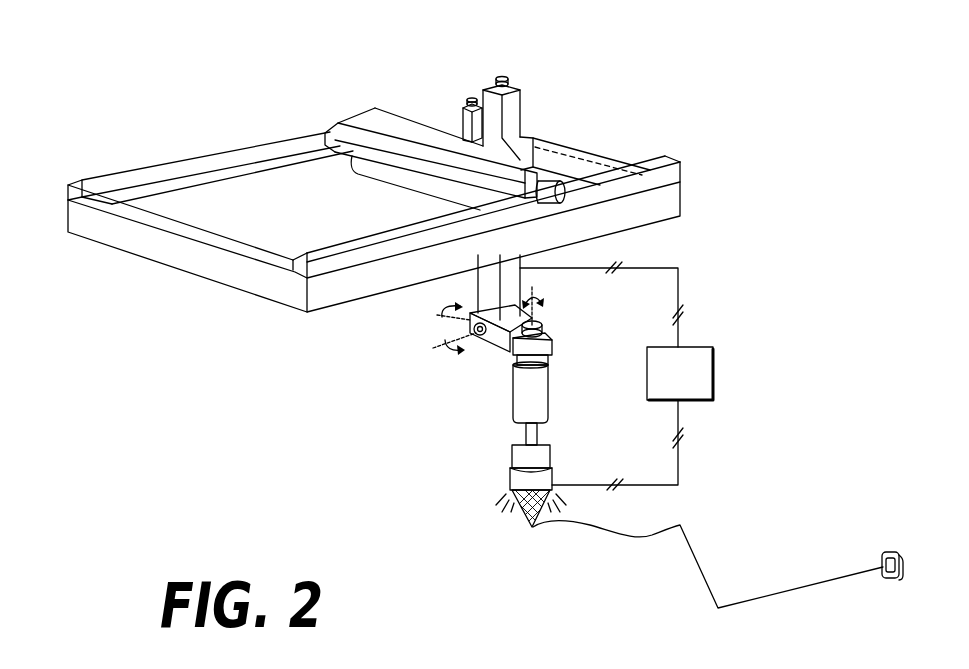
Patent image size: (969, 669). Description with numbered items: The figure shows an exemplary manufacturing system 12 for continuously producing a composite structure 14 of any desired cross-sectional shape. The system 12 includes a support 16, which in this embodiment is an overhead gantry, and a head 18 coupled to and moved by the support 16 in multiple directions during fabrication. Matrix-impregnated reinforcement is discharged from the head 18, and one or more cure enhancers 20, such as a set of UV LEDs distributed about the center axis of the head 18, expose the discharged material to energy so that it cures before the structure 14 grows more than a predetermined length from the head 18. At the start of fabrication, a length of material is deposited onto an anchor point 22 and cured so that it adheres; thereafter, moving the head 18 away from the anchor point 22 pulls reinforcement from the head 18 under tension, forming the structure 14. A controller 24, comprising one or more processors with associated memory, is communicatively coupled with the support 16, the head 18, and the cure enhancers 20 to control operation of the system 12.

The system 12 is at (136, 113).
The composite structure 14 is at (680, 525).
The support 16 is at (667, 202).
The head 18 is at (535, 457).
The cure enhancer 20 is at (512, 490).
The anchor point 22 is at (892, 552).
The controller 24 is at (692, 385).